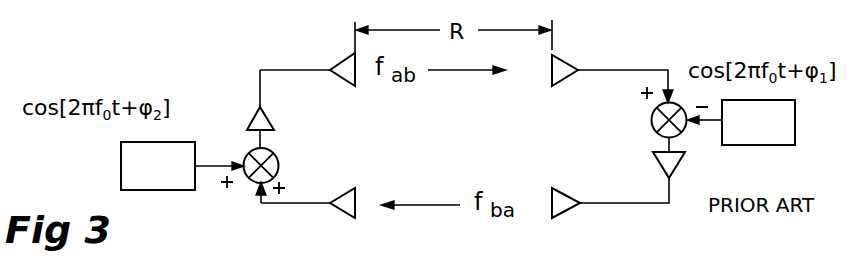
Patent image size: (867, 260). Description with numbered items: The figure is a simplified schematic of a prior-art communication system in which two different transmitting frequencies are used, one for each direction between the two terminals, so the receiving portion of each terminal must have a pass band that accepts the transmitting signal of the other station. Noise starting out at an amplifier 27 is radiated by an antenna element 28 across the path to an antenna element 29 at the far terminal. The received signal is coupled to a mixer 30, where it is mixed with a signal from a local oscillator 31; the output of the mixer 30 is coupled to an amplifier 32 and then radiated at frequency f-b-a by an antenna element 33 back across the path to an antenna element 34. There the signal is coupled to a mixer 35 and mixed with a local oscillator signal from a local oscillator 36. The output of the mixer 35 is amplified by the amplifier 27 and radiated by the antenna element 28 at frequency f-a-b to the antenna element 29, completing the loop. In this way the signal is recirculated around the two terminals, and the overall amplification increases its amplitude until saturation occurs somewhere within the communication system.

The amplifier 27 is at (267, 113).
The antenna element 28 is at (349, 60).
The antenna element 29 is at (562, 56).
The mixer 30 is at (651, 120).
The local oscillator 31 is at (795, 123).
The amplifier 32 is at (673, 163).
The antenna element 33 is at (567, 193).
The antenna element 34 is at (340, 213).
The mixer 35 is at (279, 164).
The local oscillator 36 is at (120, 162).